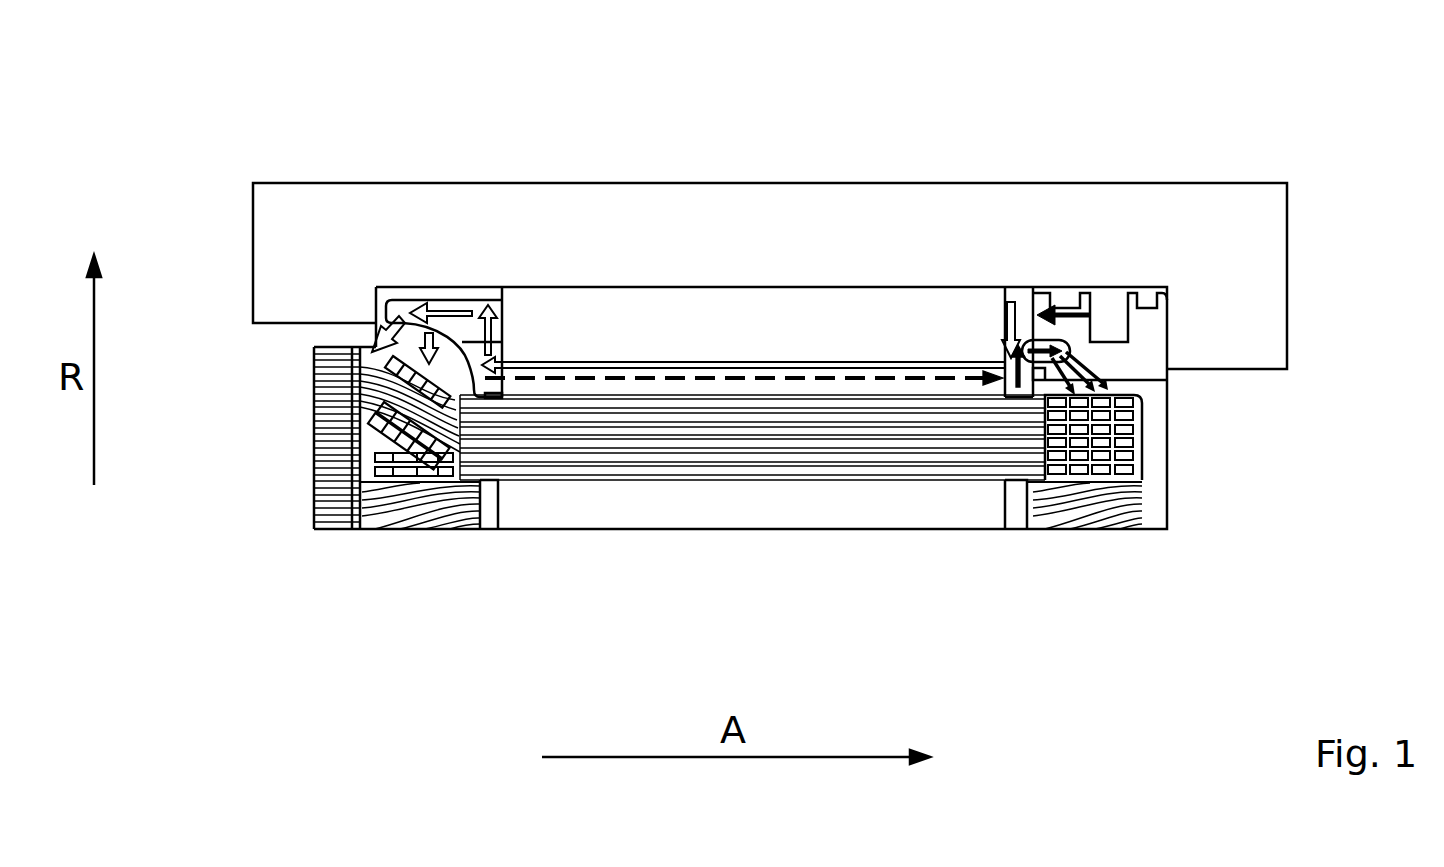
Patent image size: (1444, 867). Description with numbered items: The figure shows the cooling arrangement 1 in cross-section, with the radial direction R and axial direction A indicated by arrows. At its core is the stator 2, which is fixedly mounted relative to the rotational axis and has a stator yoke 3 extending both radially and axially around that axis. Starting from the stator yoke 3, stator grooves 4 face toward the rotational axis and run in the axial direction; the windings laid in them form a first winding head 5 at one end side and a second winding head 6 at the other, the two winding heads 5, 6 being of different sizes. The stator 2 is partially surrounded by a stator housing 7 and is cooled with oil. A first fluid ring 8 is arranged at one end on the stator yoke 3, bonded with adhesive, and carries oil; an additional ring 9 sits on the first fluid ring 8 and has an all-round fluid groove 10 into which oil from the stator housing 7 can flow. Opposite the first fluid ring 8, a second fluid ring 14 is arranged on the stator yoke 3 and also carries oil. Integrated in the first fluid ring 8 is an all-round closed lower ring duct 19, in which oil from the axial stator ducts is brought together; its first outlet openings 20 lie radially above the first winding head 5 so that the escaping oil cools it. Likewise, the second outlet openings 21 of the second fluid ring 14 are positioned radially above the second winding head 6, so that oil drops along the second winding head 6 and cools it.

The cooling arrangement 1 is at (157, 183).
The stator 2 is at (325, 417).
The stator yoke 3 is at (785, 313).
The stator grooves 4 is at (620, 505).
The first winding head 5 is at (1080, 470).
The second winding head 6 is at (425, 430).
The stator housing 7 is at (938, 212).
The first fluid ring 8 is at (1018, 300).
The additional ring 9 is at (1153, 325).
The all-round fluid groove 10 is at (1110, 310).
The second fluid ring 14 is at (480, 305).
The lower ring duct 19 is at (1028, 342).
The first outlet openings 20 is at (1067, 358).
The second outlet openings 21 is at (410, 345).